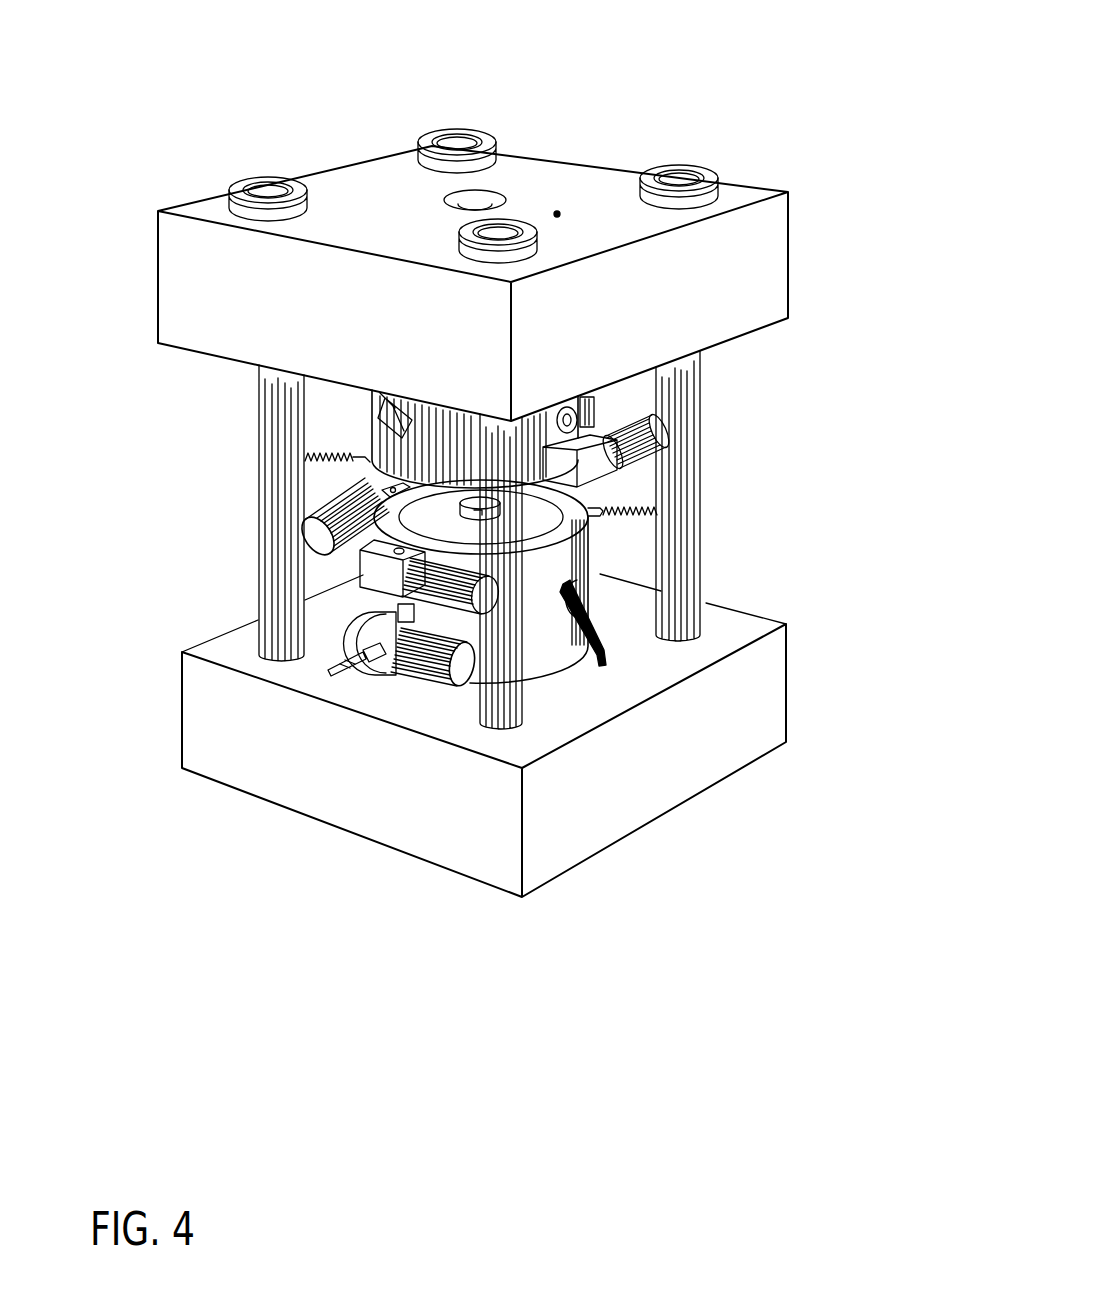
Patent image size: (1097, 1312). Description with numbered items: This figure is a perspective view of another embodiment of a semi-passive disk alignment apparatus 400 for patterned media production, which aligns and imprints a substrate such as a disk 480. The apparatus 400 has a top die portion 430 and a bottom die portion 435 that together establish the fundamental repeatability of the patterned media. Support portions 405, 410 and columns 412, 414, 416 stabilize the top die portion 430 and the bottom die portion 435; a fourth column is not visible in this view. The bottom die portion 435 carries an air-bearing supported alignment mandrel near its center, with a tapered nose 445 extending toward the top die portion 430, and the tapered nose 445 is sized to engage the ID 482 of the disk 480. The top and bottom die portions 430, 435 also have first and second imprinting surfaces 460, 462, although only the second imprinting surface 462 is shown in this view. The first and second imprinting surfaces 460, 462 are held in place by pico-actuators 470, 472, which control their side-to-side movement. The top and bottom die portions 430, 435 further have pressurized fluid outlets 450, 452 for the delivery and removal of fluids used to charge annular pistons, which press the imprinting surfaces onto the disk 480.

The disk alignment apparatus 400 is at (680, 61).
The support portion 405 is at (760, 262).
The support portion 410 is at (769, 718).
The column 412 is at (680, 387).
The column 414 is at (273, 400).
The column 416 is at (496, 692).
The top die portion 430 is at (383, 438).
The bottom die portion 435 is at (572, 567).
The tapered nose 445 is at (337, 612).
The pressurized fluid outlet 450 is at (355, 672).
The pressurized fluid outlet 452 is at (312, 534).
The first imprinting surface 460 is at (575, 522).
The second imprinting surface 462 is at (367, 452).
The pico-actuator 470 is at (340, 503).
The pico-actuator 472 is at (640, 508).
The disk 480 is at (395, 547).
The ID 482 is at (462, 509).